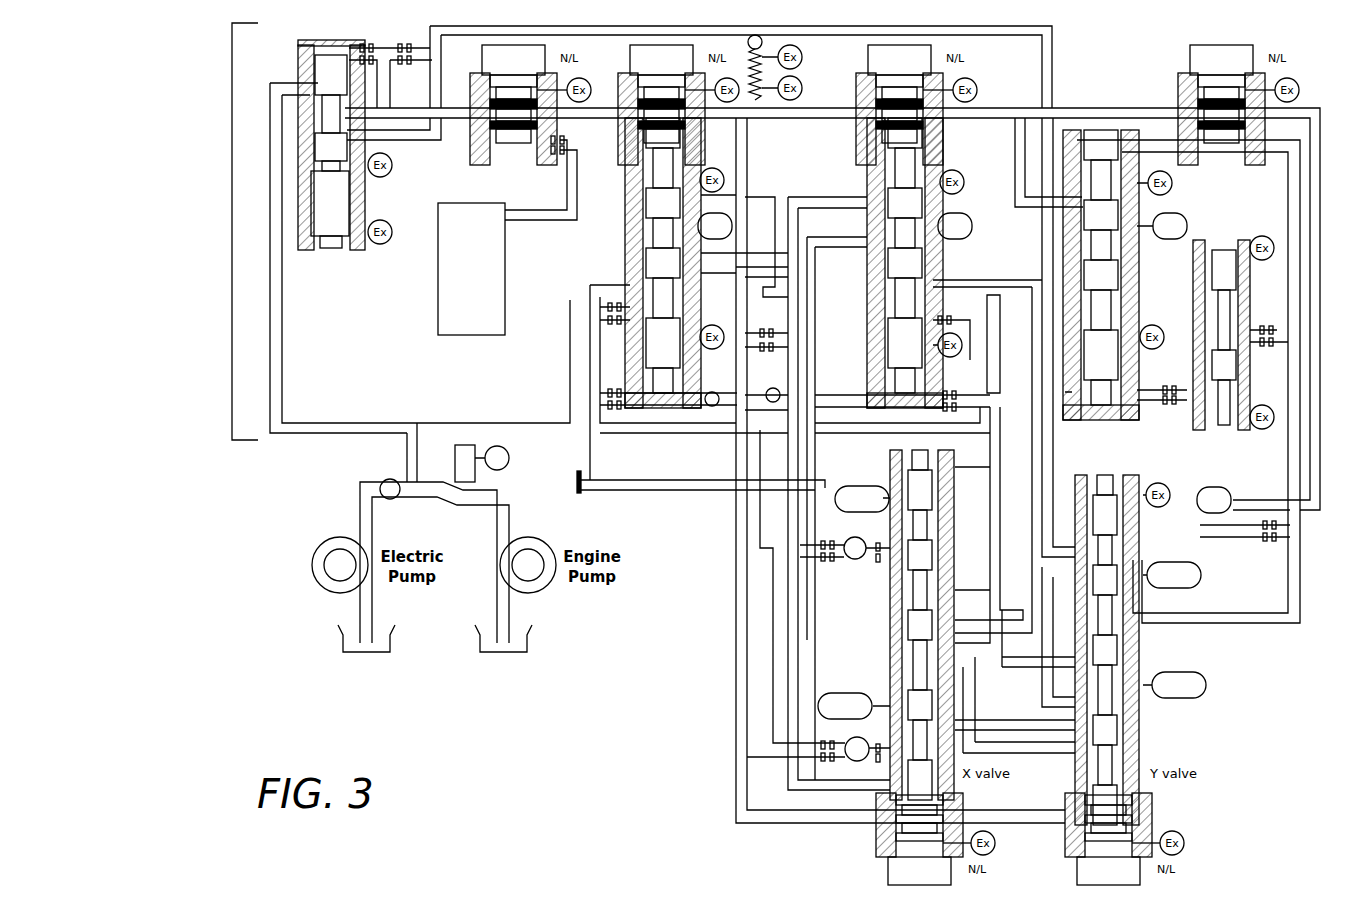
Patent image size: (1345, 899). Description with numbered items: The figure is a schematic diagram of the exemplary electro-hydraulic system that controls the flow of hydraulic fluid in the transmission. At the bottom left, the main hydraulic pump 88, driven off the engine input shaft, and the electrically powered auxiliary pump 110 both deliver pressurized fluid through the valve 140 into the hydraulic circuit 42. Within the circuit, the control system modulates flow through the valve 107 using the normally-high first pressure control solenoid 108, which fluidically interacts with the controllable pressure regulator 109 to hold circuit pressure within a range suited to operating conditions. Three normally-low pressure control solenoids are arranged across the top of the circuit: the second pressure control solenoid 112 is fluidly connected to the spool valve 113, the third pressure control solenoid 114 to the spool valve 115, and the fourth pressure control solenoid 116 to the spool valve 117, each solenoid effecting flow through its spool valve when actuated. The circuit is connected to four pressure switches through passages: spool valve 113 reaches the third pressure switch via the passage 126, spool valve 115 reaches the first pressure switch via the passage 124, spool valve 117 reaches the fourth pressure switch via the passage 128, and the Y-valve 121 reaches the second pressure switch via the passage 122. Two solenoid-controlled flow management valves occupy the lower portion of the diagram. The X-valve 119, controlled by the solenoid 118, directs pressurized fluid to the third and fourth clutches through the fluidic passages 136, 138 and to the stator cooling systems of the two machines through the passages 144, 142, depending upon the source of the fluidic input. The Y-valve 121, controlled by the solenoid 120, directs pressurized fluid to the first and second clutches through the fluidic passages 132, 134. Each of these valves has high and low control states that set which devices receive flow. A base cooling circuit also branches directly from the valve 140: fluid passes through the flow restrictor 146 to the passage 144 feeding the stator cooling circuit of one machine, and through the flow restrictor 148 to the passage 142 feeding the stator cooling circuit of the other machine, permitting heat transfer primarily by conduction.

The hydraulic circuit 42 is at (232, 100).
The main hydraulic pump 88 is at (542, 588).
The valve 107 is at (325, 225).
The pressure control solenoid PCS1 108 is at (492, 45).
The controllable pressure regulator 109 is at (505, 255).
The auxiliary pump 110 is at (325, 585).
The pressure control solenoid PCS2 112 is at (1198, 48).
The spool valve 113 is at (1115, 264).
The pressure control solenoid PCS3 114 is at (872, 45).
The spool valve 115 is at (867, 165).
The pressure control solenoid PCS4 116 is at (640, 45).
The spool valve 117 is at (660, 197).
The X-valve solenoid 118 is at (905, 880).
The X-valve 119 is at (905, 630).
The Y-valve solenoid 120 is at (1090, 880).
The Y-valve 121 is at (1129, 742).
The passage 122 is at (1222, 487).
The passage 124 is at (965, 213).
The passage 126 is at (1183, 213).
The passage 128 is at (728, 213).
The fluidic passage 132 is at (1207, 685).
The fluidic passage 134 is at (1201, 575).
The fluidic passage 136 is at (848, 693).
The fluidic passage 138 is at (856, 486).
The valve 140 is at (388, 480).
The fluidic passage 142 is at (857, 762).
The fluidic passage 144 is at (852, 560).
The flow restrictor 146 is at (829, 563).
The flow restrictor 148 is at (818, 770).